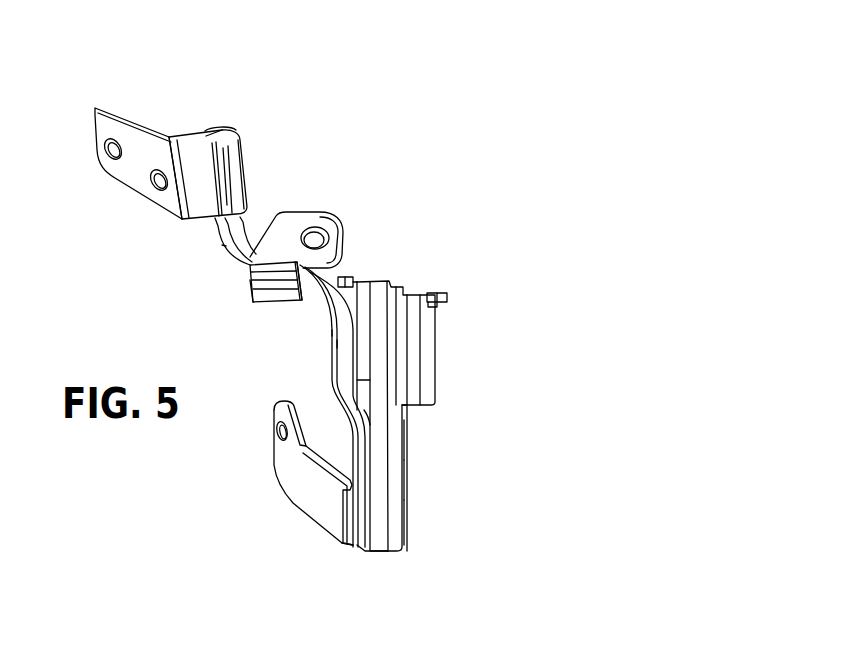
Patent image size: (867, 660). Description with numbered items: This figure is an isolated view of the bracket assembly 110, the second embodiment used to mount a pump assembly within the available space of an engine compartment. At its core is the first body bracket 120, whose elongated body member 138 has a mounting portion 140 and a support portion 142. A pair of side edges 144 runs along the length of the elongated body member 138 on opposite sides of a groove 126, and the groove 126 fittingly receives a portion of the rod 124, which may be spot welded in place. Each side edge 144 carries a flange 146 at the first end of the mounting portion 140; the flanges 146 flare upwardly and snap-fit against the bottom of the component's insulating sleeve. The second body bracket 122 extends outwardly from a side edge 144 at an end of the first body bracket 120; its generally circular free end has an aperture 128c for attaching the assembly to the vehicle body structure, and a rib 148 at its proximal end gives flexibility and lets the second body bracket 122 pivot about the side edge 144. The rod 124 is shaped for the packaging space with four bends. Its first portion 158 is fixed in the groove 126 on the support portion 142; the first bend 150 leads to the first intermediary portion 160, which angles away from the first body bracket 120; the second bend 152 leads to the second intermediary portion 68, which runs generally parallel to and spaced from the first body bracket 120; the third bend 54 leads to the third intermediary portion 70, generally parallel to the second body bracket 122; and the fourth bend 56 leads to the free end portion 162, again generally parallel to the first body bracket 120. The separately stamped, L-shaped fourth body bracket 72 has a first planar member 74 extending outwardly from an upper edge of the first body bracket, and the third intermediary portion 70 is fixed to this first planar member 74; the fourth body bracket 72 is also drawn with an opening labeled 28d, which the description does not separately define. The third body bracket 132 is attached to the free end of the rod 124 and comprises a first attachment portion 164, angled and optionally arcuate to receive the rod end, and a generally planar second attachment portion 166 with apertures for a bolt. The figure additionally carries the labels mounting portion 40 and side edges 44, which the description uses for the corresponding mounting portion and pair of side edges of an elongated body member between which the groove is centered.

The bracket assembly 110 is at (401, 109).
The third body bracket 132 is at (156, 103).
The second attachment portion 166 is at (103, 118).
The first attachment portion 164 is at (230, 142).
The mounting portion 40 is at (232, 156).
The free end portion 162 is at (232, 238).
The fourth bend 56 is at (250, 274).
The third intermediary portion 70 is at (252, 299).
The first planar member 74 is at (313, 314).
The fourth body bracket 72 is at (277, 238).
The hole 28d is at (318, 235).
The side edges 44 is at (347, 446).
The second intermediary portion 68 is at (327, 332).
The rod 124 is at (292, 352).
The first body bracket 120 is at (464, 356).
The third bend 54 is at (390, 280).
The groove 126 is at (412, 292).
The mounting portion 140 is at (428, 293).
The flange 146 is at (350, 277).
The second bend 152 is at (360, 408).
The first intermediary portion 160 is at (371, 417).
The first bend 150 is at (380, 424).
The side edges 144 is at (406, 455).
The elongated body member 138 is at (398, 483).
The support portion 142 is at (405, 525).
The first portion 158 is at (378, 546).
The rib 148 is at (343, 550).
The second body bracket 122 is at (291, 520).
The aperture 128c is at (280, 432).